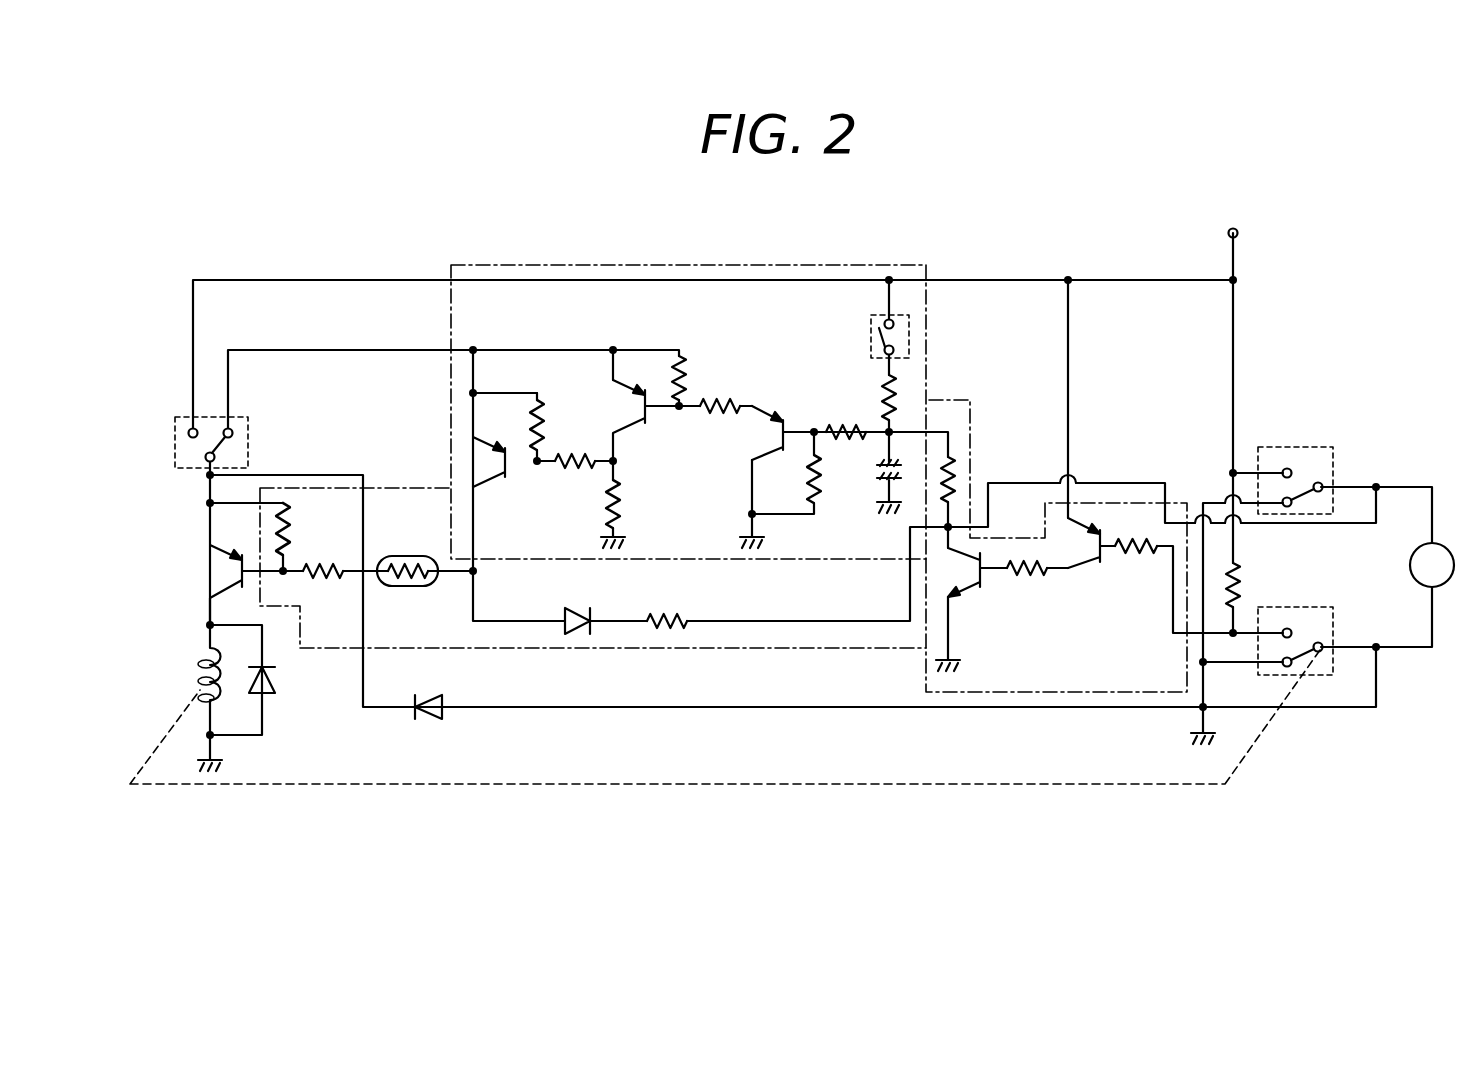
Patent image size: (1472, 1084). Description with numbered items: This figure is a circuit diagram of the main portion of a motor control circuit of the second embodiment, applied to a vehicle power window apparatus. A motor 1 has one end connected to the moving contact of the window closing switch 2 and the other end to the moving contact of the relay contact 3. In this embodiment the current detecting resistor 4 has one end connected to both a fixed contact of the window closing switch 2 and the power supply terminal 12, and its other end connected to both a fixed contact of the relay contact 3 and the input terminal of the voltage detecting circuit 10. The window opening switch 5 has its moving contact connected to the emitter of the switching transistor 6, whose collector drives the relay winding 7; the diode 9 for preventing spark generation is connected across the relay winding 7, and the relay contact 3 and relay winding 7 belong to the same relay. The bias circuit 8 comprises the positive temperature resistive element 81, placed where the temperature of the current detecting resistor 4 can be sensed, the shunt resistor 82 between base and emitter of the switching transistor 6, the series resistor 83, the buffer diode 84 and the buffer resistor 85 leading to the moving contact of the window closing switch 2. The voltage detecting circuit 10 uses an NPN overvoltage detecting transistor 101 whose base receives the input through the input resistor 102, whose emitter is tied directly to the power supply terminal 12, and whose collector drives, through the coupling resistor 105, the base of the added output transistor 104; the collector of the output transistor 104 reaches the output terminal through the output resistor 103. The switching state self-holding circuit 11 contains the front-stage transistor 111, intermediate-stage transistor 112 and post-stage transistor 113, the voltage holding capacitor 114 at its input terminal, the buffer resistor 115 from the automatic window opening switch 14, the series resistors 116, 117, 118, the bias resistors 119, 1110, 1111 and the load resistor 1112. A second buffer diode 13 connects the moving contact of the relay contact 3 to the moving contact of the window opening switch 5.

The motor 1 is at (1444, 548).
The window closing switch 2 is at (1326, 446).
The relay contact 3 is at (1320, 606).
The current detecting resistor 4 is at (1244, 581).
The window opening switch 5 is at (250, 433).
The switching transistor 6 is at (228, 574).
The relay winding 7 is at (204, 681).
The bias circuit 8 is at (386, 488).
The positive temperature resistive element 81 is at (416, 586).
The shunt resistor 82 is at (296, 533).
The series resistor 83 is at (328, 581).
The buffer diode 84 is at (578, 606).
The buffer resistor 85 is at (664, 606).
The diode for preventing spark generation 9 is at (278, 683).
The voltage detecting circuit 10 is at (1118, 502).
The overvoltage detecting transistor 101 is at (1082, 572).
The input resistor 102 is at (1136, 554).
The output resistor 103 is at (956, 474).
The output transistor 104 is at (970, 596).
The coupling resistor 105 is at (1022, 576).
The switching state self-holding circuit 11 is at (664, 265).
The front-stage transistor 111 is at (776, 437).
The intermediate-stage transistor 112 is at (630, 411).
The post-stage transistor 113 is at (500, 452).
The voltage holding capacitor 114 is at (876, 492).
The buffer resistor 115 is at (880, 398).
The series resistor 116 is at (849, 442).
The series resistor 117 is at (728, 400).
The series resistor 118 is at (570, 470).
The bias resistor 119 is at (805, 462).
The bias resistor 1110 is at (690, 366).
The bias resistor 1111 is at (550, 418).
The load resistor 1112 is at (622, 489).
The power supply terminal 12 is at (1228, 233).
The second buffer diode 13 is at (432, 722).
The automatic window opening switch 14 is at (910, 330).